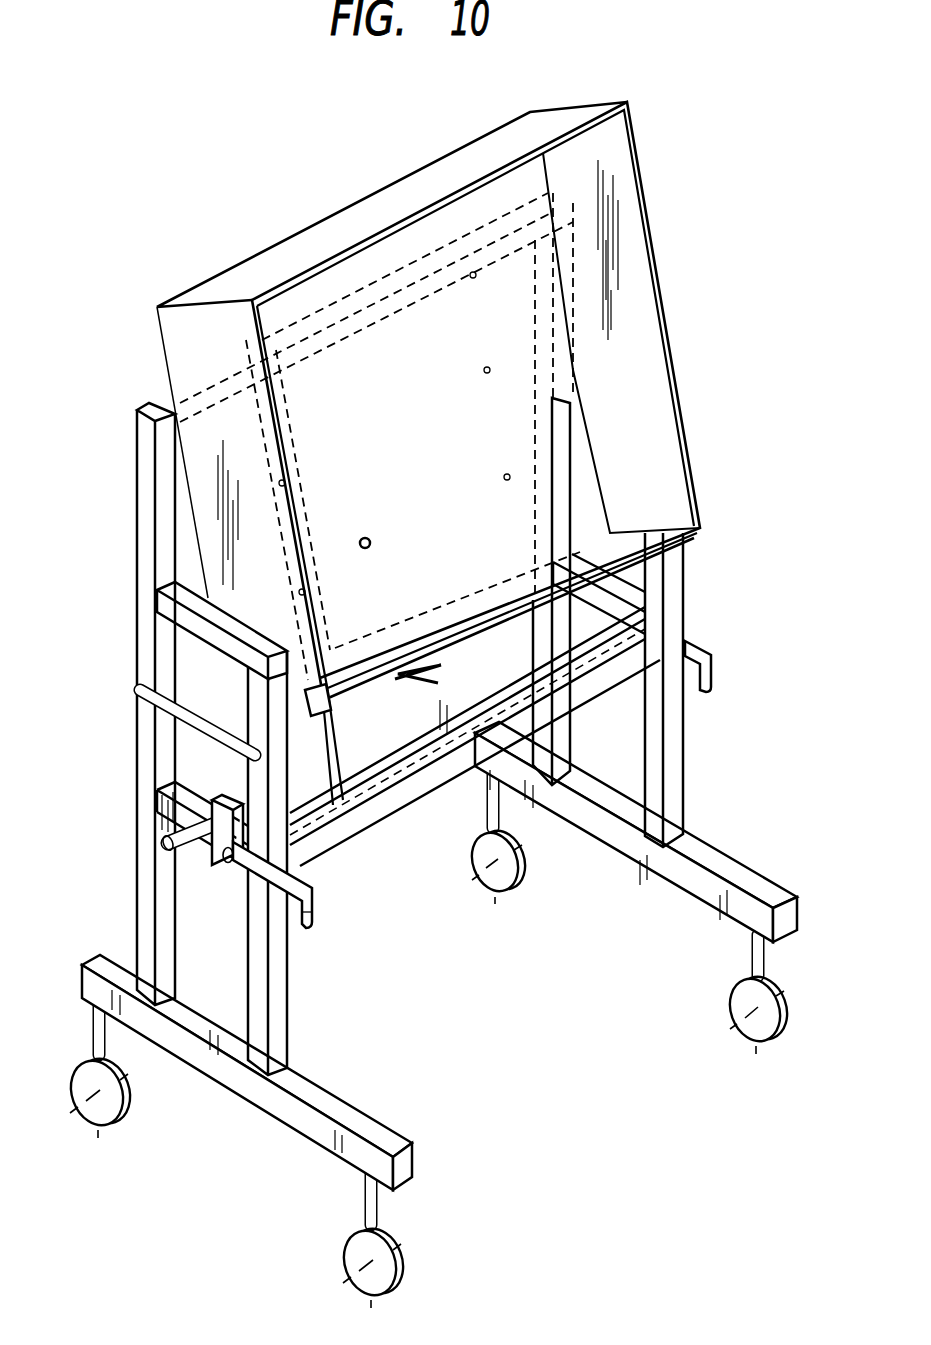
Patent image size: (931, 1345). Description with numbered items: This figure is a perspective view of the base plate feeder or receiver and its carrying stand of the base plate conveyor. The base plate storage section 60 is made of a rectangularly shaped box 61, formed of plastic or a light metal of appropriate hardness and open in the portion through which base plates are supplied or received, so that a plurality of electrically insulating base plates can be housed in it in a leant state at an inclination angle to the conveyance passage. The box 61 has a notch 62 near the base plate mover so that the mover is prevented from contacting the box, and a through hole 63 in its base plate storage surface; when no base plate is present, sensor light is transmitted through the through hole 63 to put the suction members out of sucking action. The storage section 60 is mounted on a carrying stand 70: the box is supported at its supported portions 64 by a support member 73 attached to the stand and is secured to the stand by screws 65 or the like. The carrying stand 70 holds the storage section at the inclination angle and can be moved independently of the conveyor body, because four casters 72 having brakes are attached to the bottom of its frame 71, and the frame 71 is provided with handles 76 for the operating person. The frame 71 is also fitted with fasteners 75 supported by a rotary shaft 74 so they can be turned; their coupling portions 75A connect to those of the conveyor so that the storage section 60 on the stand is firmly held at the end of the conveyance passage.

The base plate storage section 60 is at (466, 128).
The box 61 is at (641, 257).
The notch 62 is at (490, 630).
The through hole 63 is at (371, 545).
The supported portions 64 is at (322, 688).
The screws 65 is at (473, 275).
The carrying stand 70 is at (126, 643).
The frame 71 is at (150, 563).
The casters 72 is at (122, 1094).
The support member 73 is at (268, 645).
The rotary shaft 74 is at (219, 865).
The fasteners 75 is at (304, 883).
The coupling portions 75A is at (313, 926).
The handles 76 is at (186, 737).